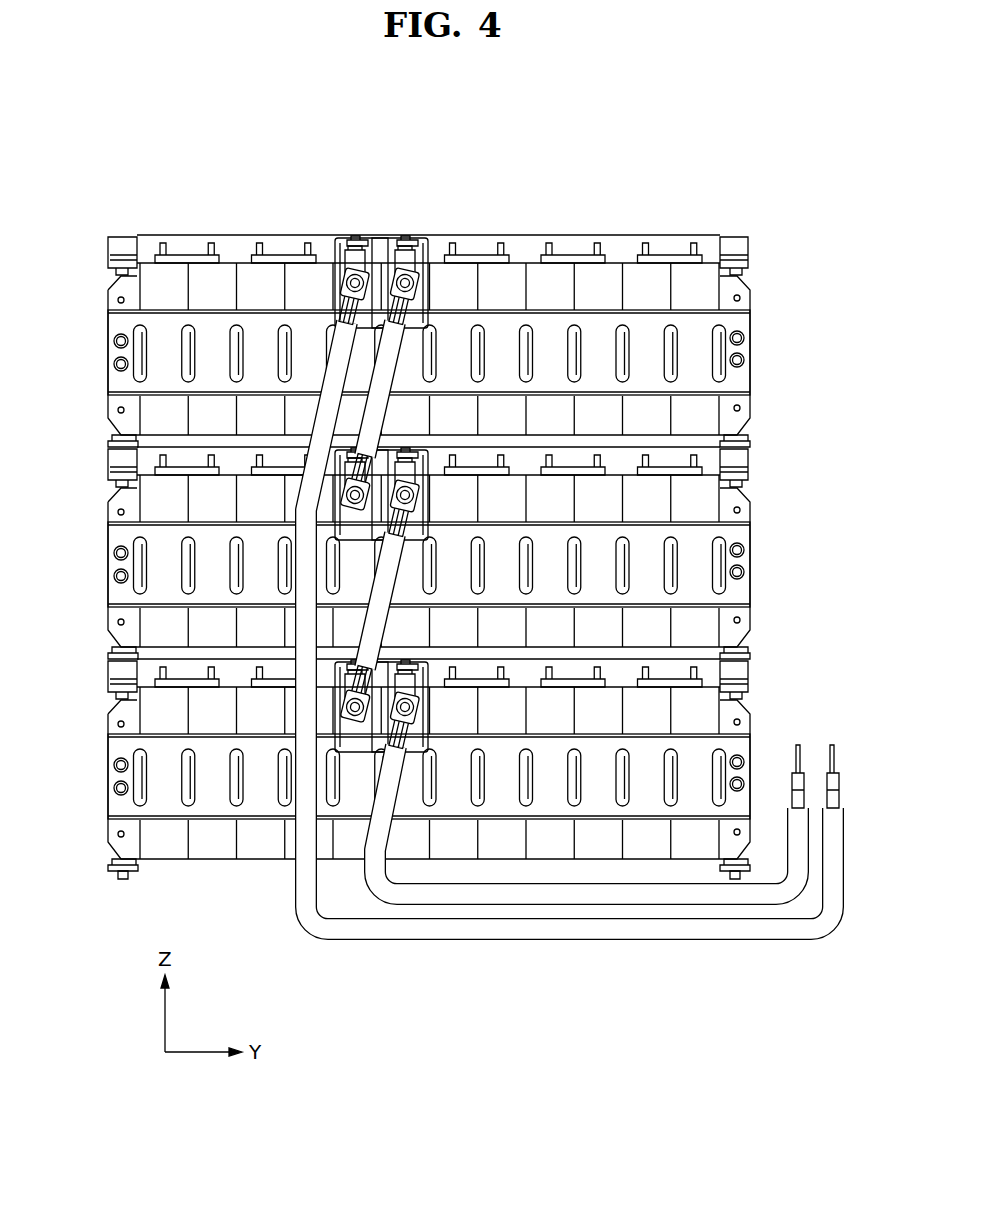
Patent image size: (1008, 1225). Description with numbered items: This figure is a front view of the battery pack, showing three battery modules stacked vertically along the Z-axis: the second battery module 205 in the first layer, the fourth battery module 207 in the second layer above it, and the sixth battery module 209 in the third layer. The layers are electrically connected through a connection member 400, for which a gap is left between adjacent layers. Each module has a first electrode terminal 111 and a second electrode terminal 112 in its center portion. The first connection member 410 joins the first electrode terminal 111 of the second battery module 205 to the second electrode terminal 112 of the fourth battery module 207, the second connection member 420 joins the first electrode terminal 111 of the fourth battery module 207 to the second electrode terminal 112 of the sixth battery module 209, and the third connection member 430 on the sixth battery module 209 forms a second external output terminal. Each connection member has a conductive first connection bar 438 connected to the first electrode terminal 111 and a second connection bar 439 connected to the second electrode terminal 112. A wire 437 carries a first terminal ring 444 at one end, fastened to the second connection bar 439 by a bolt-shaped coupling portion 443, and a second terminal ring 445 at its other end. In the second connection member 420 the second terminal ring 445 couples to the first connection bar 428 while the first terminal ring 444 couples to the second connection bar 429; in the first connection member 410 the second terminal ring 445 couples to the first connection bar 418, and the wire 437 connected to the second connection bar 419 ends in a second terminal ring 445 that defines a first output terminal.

The first electrode terminal 111 is at (352, 236).
The second electrode terminal 112 is at (404, 236).
The second battery module 205 is at (100, 769).
The fourth battery module 207 is at (100, 545).
The sixth battery module 209 is at (100, 330).
The connection member 400 is at (441, 557).
The first connection member 410 is at (514, 678).
The first connection bar 418 is at (347, 674).
The second connection bar 419 is at (420, 676).
The second connection member 420 is at (520, 476).
The first connection bar 428 is at (345, 463).
The second connection bar 429 is at (418, 464).
The third connection member 430 is at (533, 250).
The wire 437 is at (398, 372).
The first connection bar 438 is at (352, 250).
The second connection bar 439 is at (410, 255).
The coupling portion 443 is at (346, 264).
The first terminal ring 444 is at (415, 275).
The second terminal ring 445 is at (350, 495).